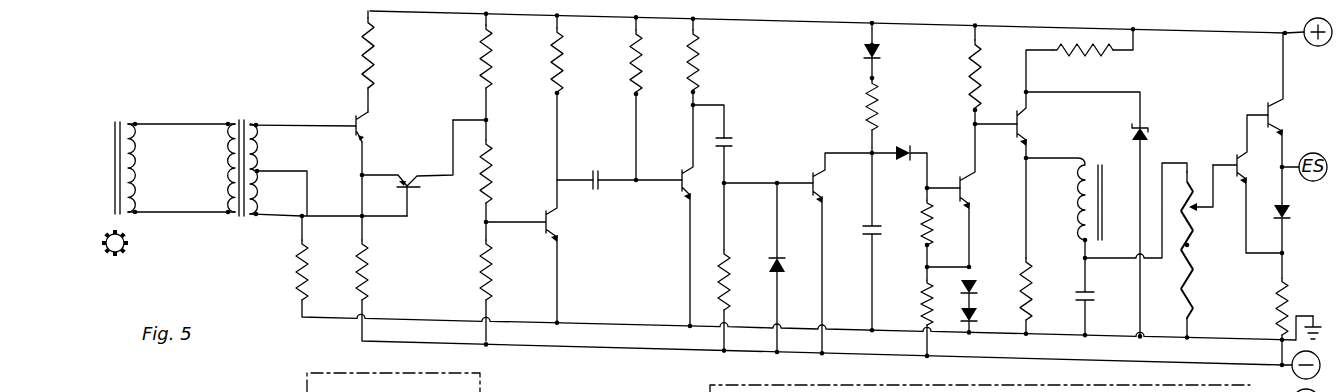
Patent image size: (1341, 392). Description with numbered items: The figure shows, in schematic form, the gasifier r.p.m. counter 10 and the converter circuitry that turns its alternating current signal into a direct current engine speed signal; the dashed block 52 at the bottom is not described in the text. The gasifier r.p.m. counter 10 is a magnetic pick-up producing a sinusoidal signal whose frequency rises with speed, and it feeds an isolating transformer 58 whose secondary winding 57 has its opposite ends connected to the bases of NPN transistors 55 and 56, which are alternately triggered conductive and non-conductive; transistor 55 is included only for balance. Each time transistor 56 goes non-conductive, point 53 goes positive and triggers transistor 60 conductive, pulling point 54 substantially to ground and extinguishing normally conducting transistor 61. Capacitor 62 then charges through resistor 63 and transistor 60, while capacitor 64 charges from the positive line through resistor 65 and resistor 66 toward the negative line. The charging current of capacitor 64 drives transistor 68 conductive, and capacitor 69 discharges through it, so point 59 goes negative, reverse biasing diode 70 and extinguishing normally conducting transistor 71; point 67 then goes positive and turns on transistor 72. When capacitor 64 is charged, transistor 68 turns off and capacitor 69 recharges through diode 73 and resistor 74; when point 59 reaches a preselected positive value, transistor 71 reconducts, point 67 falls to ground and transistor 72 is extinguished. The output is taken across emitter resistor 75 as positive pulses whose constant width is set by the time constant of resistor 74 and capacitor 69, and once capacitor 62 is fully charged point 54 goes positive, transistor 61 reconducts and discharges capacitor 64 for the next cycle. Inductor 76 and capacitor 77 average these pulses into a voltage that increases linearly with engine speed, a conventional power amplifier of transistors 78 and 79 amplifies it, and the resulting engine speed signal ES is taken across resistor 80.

The gasifier r.p.m. counter 10 is at (126, 231).
The circuit block 52 is at (536, 391).
The point 53 is at (489, 120).
The point 54 is at (638, 184).
The NPN transistor 55 is at (355, 116).
The NPN transistor 56 is at (404, 182).
The secondary winding 57 is at (258, 153).
The isolating transformer 58 is at (243, 218).
The point 59 is at (870, 151).
The NPN transistor 60 is at (549, 221).
The NPN transistor 61 is at (681, 178).
The capacitor 62 is at (597, 170).
The resistor 63 is at (641, 60).
The capacitor 64 is at (733, 140).
The resistor 65 is at (700, 48).
The resistor 66 is at (726, 275).
The point 67 is at (975, 125).
The NPN transistor 68 is at (812, 183).
The capacitor 69 is at (874, 226).
The diode 70 is at (911, 152).
The NPN transistor 71 is at (962, 188).
The NPN transistor 72 is at (1020, 122).
The diode 73 is at (880, 52).
The resistor 74 is at (876, 108).
The emitter resistor 75 is at (1029, 280).
The inductor 76 is at (1097, 200).
The capacitor 77 is at (1090, 296).
The transistor 78 is at (1270, 112).
The transistor 79 is at (1236, 163).
The resistor 80 is at (1280, 303).